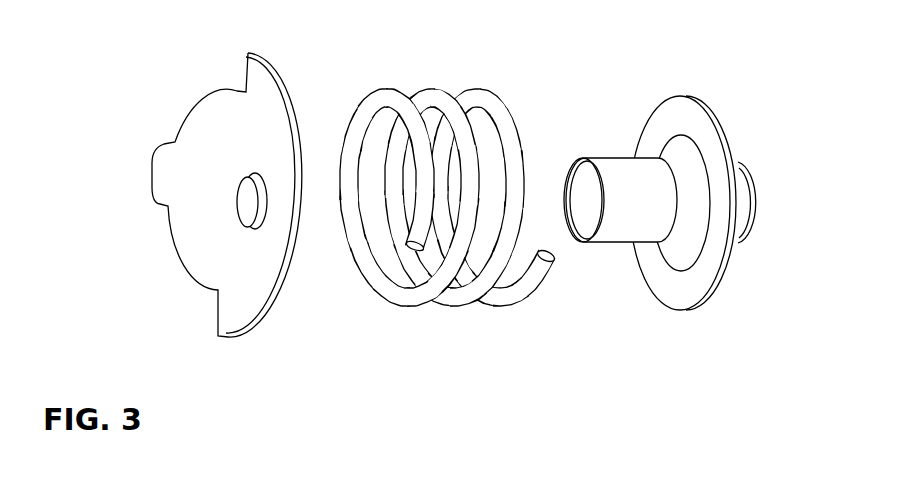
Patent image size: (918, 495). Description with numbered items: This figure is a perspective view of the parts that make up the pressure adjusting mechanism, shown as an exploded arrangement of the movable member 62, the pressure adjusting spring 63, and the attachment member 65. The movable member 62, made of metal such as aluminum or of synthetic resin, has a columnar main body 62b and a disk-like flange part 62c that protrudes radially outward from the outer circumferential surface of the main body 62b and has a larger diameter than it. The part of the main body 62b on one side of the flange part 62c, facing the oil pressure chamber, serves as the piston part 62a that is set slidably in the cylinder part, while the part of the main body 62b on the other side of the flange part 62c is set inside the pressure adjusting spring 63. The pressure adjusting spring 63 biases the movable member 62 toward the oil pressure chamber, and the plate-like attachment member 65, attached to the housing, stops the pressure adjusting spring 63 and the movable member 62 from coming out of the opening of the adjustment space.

The movable member 62 is at (683, 196).
The piston part 62a is at (743, 227).
The main body 62b is at (617, 232).
The flange part 62c is at (682, 283).
The pressure adjusting spring 63 is at (395, 297).
The attachment member 65 is at (225, 275).